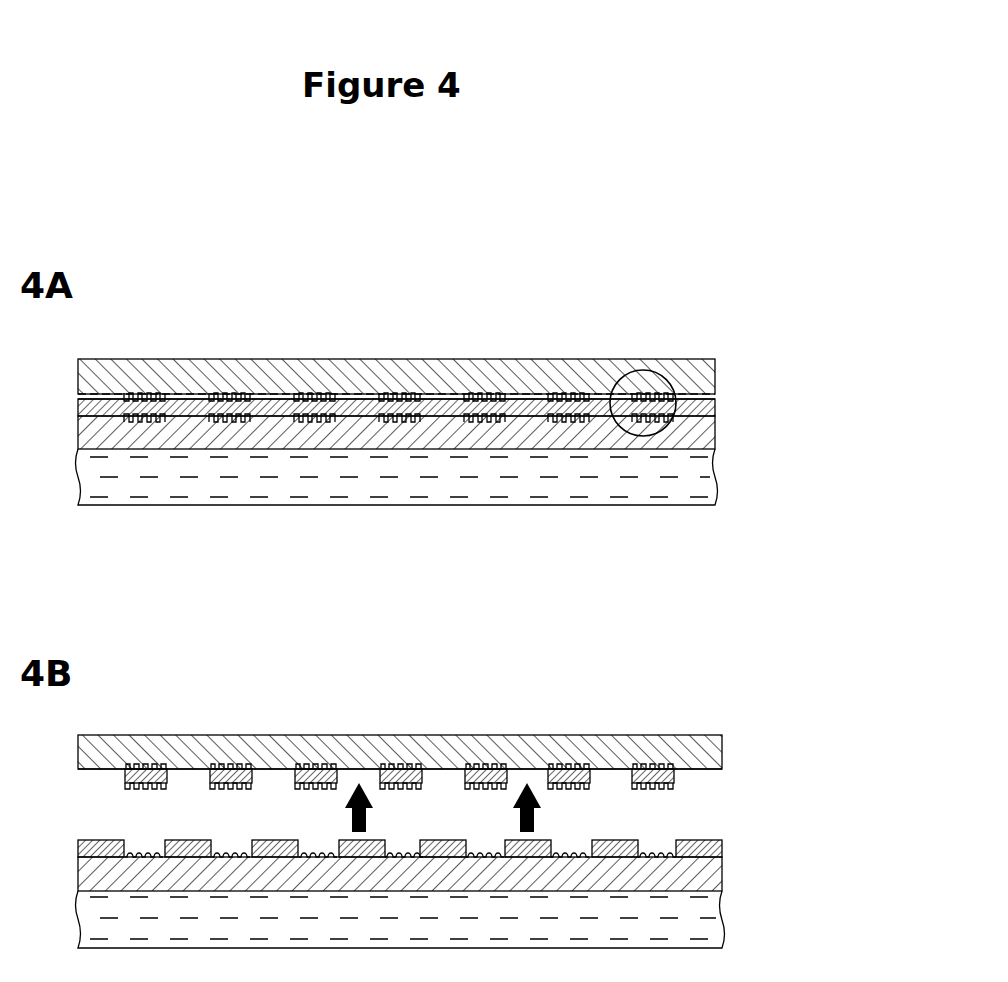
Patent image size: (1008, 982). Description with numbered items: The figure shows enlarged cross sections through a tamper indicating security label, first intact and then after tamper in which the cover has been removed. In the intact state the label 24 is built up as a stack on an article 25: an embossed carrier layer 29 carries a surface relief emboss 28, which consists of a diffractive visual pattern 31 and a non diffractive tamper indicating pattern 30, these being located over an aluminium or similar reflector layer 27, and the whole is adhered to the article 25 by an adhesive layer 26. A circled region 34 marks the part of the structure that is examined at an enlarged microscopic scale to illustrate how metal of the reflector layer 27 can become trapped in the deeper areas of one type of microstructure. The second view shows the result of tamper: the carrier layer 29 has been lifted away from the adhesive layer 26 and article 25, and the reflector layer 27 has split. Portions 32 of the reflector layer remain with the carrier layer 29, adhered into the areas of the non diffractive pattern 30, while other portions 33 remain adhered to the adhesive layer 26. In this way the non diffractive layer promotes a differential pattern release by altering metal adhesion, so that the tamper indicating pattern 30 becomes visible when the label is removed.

In FIG. 4A, the multilayer film stack 24 is at (722, 359).
In FIG. 4A, the article 25 is at (722, 452).
In FIG. 4B, the article 25 is at (729, 893).
In FIG. 4A, the adhesive layer 26 is at (78, 429).
In FIG. 4B, the adhesive layer 26 is at (78, 874).
In FIG. 4A, the reflector layer 27 is at (78, 409).
In FIG. 4A, the surface relief emboss 28 is at (78, 391).
In FIG. 4B, the surface relief emboss 28 is at (78, 768).
In FIG. 4A, the embossed carrier layer 29 is at (78, 370).
In FIG. 4B, the embossed carrier layer 29 is at (78, 748).
In FIG. 4A, the non diffractive tamper indicating pattern 30 is at (145, 390).
In FIG. 4B, the non diffractive tamper indicating pattern 30 is at (146, 762).
In FIG. 4A, the diffractive visual pattern 31 is at (275, 390).
In FIG. 4B, the diffractive visual pattern 31 is at (276, 765).
In FIG. 4B, the portions of the reflector layer 32 is at (145, 793).
In FIG. 4B, the other portions of the reflector layer 33 is at (190, 836).
In FIG. 4A, the enlarged region 34 is at (664, 371).